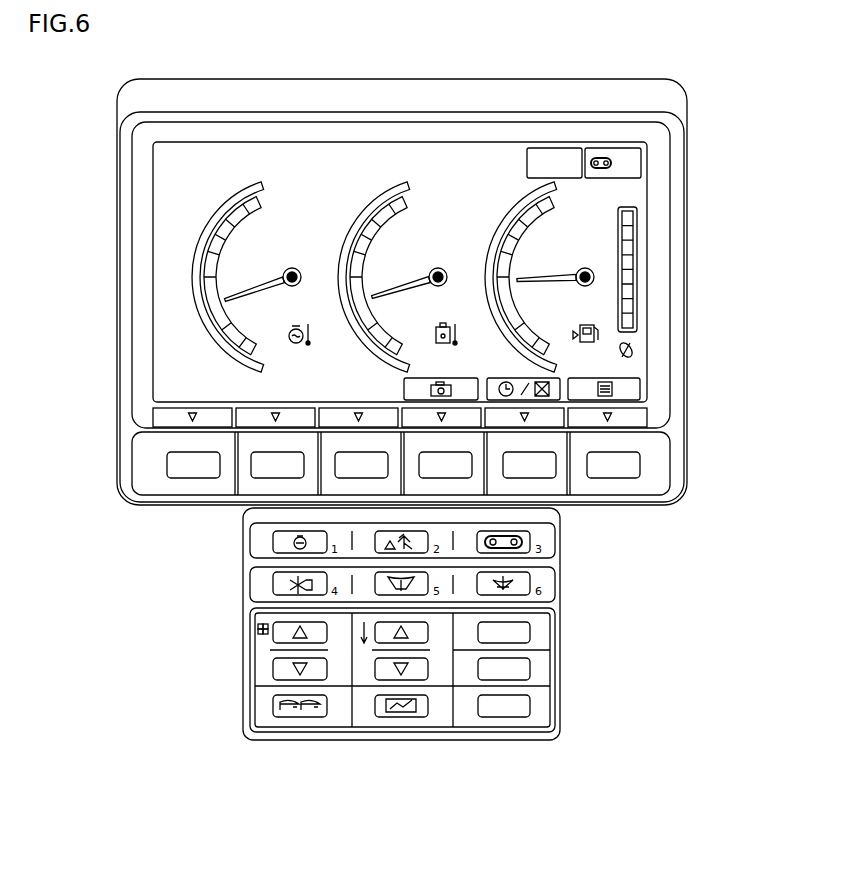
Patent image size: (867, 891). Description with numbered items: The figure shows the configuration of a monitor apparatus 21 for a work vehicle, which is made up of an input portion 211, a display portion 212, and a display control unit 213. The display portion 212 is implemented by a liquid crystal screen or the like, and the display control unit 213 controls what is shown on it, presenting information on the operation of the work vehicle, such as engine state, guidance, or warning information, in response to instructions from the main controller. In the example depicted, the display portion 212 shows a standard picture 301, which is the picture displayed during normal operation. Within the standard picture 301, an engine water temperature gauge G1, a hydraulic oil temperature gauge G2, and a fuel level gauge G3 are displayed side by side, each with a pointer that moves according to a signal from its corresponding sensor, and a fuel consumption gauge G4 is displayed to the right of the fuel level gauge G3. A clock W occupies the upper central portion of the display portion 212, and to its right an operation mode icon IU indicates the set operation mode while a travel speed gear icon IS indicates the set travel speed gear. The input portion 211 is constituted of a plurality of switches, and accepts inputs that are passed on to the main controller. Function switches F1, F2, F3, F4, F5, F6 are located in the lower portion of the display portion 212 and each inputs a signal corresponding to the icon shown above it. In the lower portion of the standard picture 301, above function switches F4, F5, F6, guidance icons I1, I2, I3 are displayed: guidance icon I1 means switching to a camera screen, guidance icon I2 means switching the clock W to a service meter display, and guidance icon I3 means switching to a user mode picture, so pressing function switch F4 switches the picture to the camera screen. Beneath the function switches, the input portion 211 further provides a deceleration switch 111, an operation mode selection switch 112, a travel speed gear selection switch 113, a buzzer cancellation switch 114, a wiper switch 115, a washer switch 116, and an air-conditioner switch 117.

The monitor apparatus 21 is at (520, 79).
The display control unit 213 is at (338, 100).
The display portion 212 is at (650, 190).
The standard picture 301 is at (168, 343).
The clock W is at (420, 148).
The operation mode icon IU is at (563, 148).
The travel speed gear icon IS is at (612, 148).
The engine water temperature gauge G1 is at (210, 218).
The hydraulic oil temperature gauge G2 is at (356, 218).
The fuel level gauge G3 is at (503, 218).
The fuel consumption gauge G4 is at (638, 265).
The guidance icon I1 is at (404, 385).
The guidance icon I2 is at (560, 378).
The guidance icon I3 is at (640, 389).
The function switch F1 is at (162, 488).
The function switch F2 is at (250, 488).
The function switch F3 is at (330, 487).
The function switch F4 is at (470, 488).
The function switch F5 is at (556, 488).
The function switch F6 is at (638, 488).
The input portion 211 is at (745, 430).
The deceleration switch 111 is at (272, 546).
The operation mode selection switch 112 is at (363, 548).
The travel speed gear selection switch 113 is at (549, 548).
The buzzer cancellation switch 114 is at (272, 588).
The wiper switch 115 is at (365, 590).
The washer switch 116 is at (549, 588).
The air-conditioner switch 117 is at (560, 663).